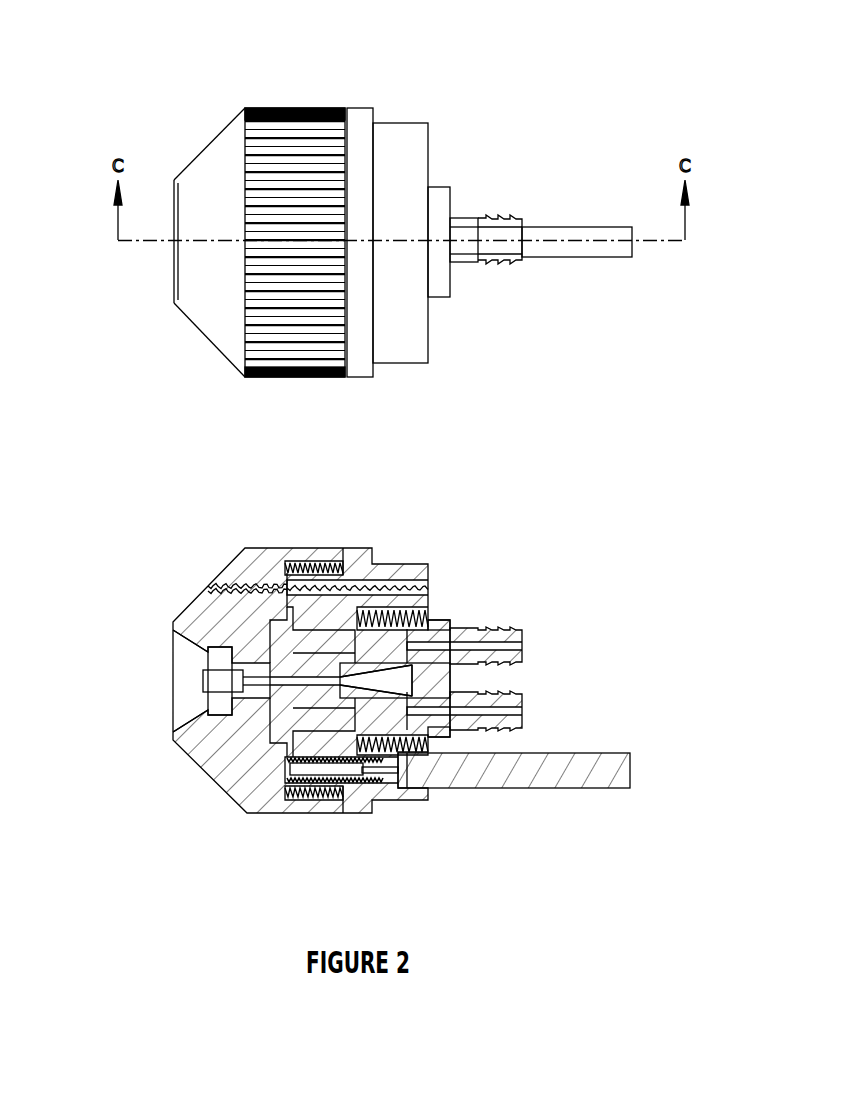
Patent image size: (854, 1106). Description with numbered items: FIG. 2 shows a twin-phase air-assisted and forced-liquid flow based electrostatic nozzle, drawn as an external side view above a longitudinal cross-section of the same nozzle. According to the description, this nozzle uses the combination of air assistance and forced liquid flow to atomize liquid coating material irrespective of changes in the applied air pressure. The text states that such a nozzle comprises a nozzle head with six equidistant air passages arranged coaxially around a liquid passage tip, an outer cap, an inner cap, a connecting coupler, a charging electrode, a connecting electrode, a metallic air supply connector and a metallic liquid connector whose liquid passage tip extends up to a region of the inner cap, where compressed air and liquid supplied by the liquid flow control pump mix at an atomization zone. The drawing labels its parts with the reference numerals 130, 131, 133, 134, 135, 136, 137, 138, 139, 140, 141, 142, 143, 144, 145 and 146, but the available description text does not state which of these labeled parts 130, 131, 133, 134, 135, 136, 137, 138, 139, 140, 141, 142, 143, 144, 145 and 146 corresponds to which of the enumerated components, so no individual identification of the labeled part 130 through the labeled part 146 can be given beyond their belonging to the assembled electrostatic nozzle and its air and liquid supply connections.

The flange 130 is at (356, 125).
The knurled nozzle head 131 is at (216, 253).
The outlet fitting boss 133 is at (447, 205).
The nozzle body 134 is at (192, 650).
The lower body wall 135 is at (283, 806).
The lower hose barb 136 is at (527, 711).
The upper hose barb 137 is at (527, 646).
The nozzle insert 138 is at (233, 720).
The central core 139 is at (322, 657).
The seal 140 is at (262, 638).
The mounting plate 141 is at (411, 789).
The threaded connection 142 is at (343, 811).
The nozzle bore 143 is at (178, 708).
The nozzle tip 144 is at (210, 716).
The inlet opening 145 is at (186, 656).
The retaining spring 146 is at (267, 577).